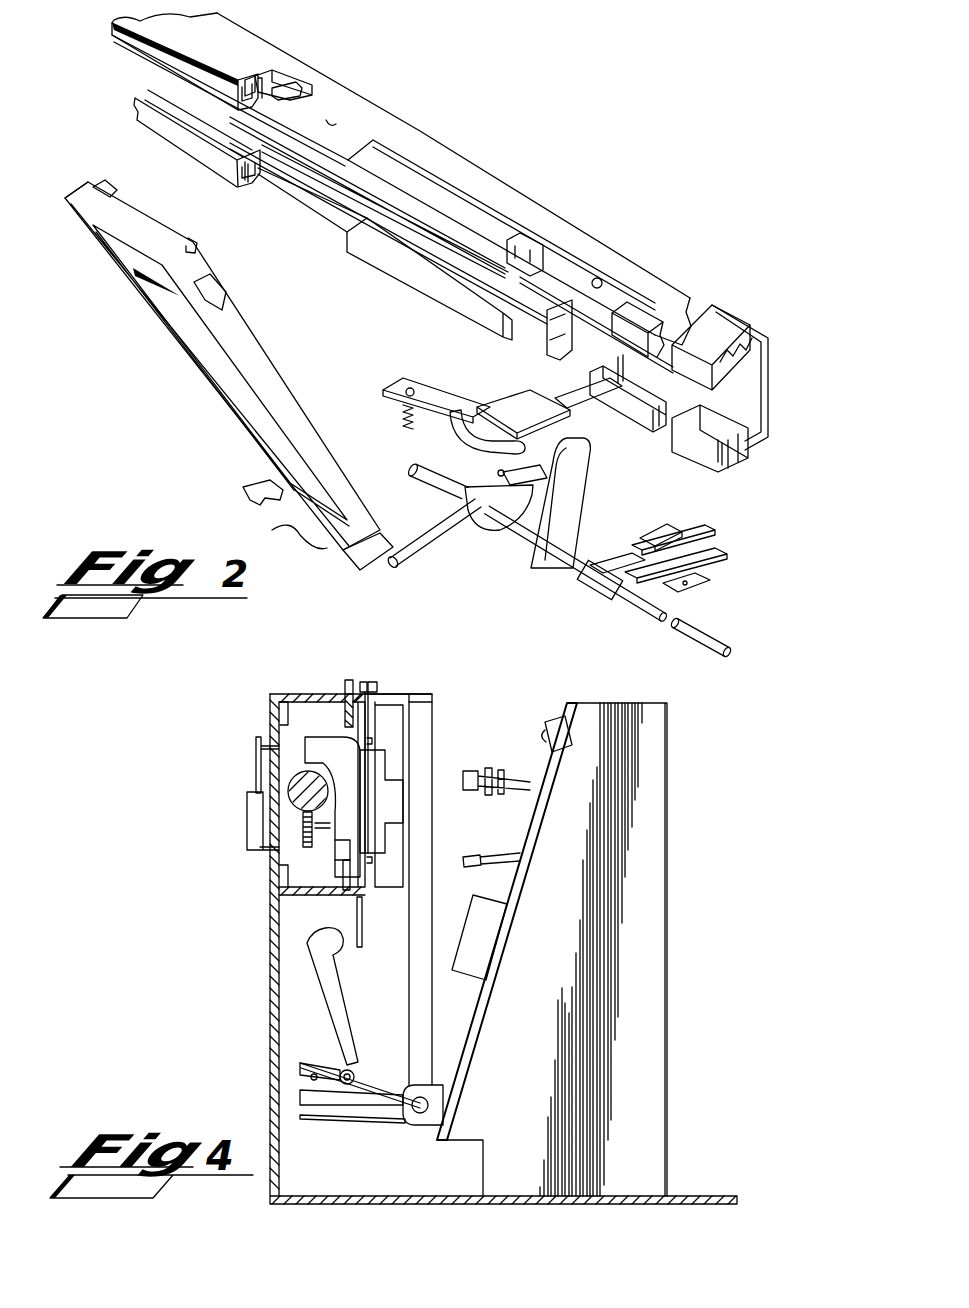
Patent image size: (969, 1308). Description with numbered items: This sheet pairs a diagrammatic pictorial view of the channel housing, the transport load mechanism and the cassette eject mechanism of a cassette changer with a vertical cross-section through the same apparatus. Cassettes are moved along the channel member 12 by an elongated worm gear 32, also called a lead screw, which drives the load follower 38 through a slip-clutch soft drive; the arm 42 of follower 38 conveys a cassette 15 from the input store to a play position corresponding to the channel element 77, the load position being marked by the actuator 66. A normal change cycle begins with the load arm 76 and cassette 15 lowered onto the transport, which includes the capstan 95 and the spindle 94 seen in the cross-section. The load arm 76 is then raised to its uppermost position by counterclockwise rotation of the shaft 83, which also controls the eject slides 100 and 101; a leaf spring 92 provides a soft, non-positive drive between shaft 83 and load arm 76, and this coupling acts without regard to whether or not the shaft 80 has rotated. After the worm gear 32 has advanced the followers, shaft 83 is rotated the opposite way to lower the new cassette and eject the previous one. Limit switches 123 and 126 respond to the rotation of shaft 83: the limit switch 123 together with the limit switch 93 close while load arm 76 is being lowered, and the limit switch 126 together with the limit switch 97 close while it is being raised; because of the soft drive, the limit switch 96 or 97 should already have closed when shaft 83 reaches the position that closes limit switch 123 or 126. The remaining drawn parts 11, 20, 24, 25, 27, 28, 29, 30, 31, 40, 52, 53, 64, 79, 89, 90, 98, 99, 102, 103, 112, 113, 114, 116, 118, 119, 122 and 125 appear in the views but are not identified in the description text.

In FIG. 4, the housing 11 is at (270, 1010).
In FIG. 2, the channel member 12 is at (500, 190).
In FIG. 4, the channel member 12 is at (287, 692).
In FIG. 4, the cassette 15 is at (393, 722).
In FIG. 4, the inclined plate 20 is at (547, 770).
In FIG. 2, the channel 24 is at (230, 65).
In FIG. 2, the slot 25 is at (243, 173).
In FIG. 2, the flange 27 is at (747, 363).
In FIG. 2, the channel 28 is at (168, 76).
In FIG. 2, the notch 29 is at (333, 124).
In FIG. 2, the end frame 30 is at (753, 377).
In FIG. 2, the aperture 31 is at (601, 283).
In FIG. 4, the worm gear 32 is at (293, 787).
In FIG. 4, the load follower 38 is at (340, 847).
In FIG. 4, the block 40 is at (320, 743).
In FIG. 4, the arm 42 is at (370, 773).
In FIG. 4, the screw 52 is at (302, 818).
In FIG. 4, the tab 53 is at (323, 823).
In FIG. 4, the block 64 is at (247, 815).
In FIG. 4, the actuator 66 is at (258, 760).
In FIG. 2, the load arm 76 is at (283, 395).
In FIG. 4, the load arm 76 is at (417, 1022).
In FIG. 2, the channel element 77 is at (80, 195).
In FIG. 4, the channel element 77 is at (393, 697).
In FIG. 2, the bracket 79 is at (273, 503).
In FIG. 4, the bracket 79 is at (450, 1168).
In FIG. 2, the shaft 80 is at (405, 568).
In FIG. 4, the shaft 80 is at (417, 1159).
In FIG. 2, the shaft 83 is at (693, 637).
In FIG. 4, the shaft 83 is at (340, 1090).
In FIG. 2, the cam block 89 is at (487, 530).
In FIG. 2, the plate 90 is at (499, 473).
In FIG. 4, the plate 90 is at (308, 1075).
In FIG. 2, the leaf spring 92 is at (433, 530).
In FIG. 4, the leaf spring 92 is at (370, 1083).
In FIG. 4, the limit switch 93 is at (553, 722).
In FIG. 4, the spindle 94 is at (463, 797).
In FIG. 4, the capstan 95 is at (470, 847).
In FIG. 4, the limit switch 96 is at (483, 930).
In FIG. 2, the limit switch 97 is at (302, 78).
In FIG. 4, the limit switch 97 is at (348, 680).
In FIG. 2, the pin 98 is at (285, 100).
In FIG. 4, the pin 98 is at (363, 682).
In FIG. 2, the pin 99 is at (104, 182).
In FIG. 4, the pin 99 is at (373, 683).
In FIG. 2, the eject slide 100 is at (563, 330).
In FIG. 2, the eject slide 101 is at (547, 383).
In FIG. 2, the plate 102 is at (570, 407).
In FIG. 2, the arm 103 is at (503, 440).
In FIG. 4, the arm 103 is at (355, 910).
In FIG. 2, the plate 112 is at (420, 403).
In FIG. 2, the screw 113 is at (400, 397).
In FIG. 2, the spring 114 is at (400, 421).
In FIG. 2, the lever 116 is at (585, 470).
In FIG. 4, the lever 116 is at (333, 1000).
In FIG. 2, the sleeve 118 is at (590, 583).
In FIG. 2, the plate 119 is at (633, 567).
In FIG. 2, the bar 122 is at (697, 548).
In FIG. 2, the limit switch 123 is at (657, 527).
In FIG. 2, the bar 125 is at (717, 573).
In FIG. 2, the limit switch 126 is at (697, 593).